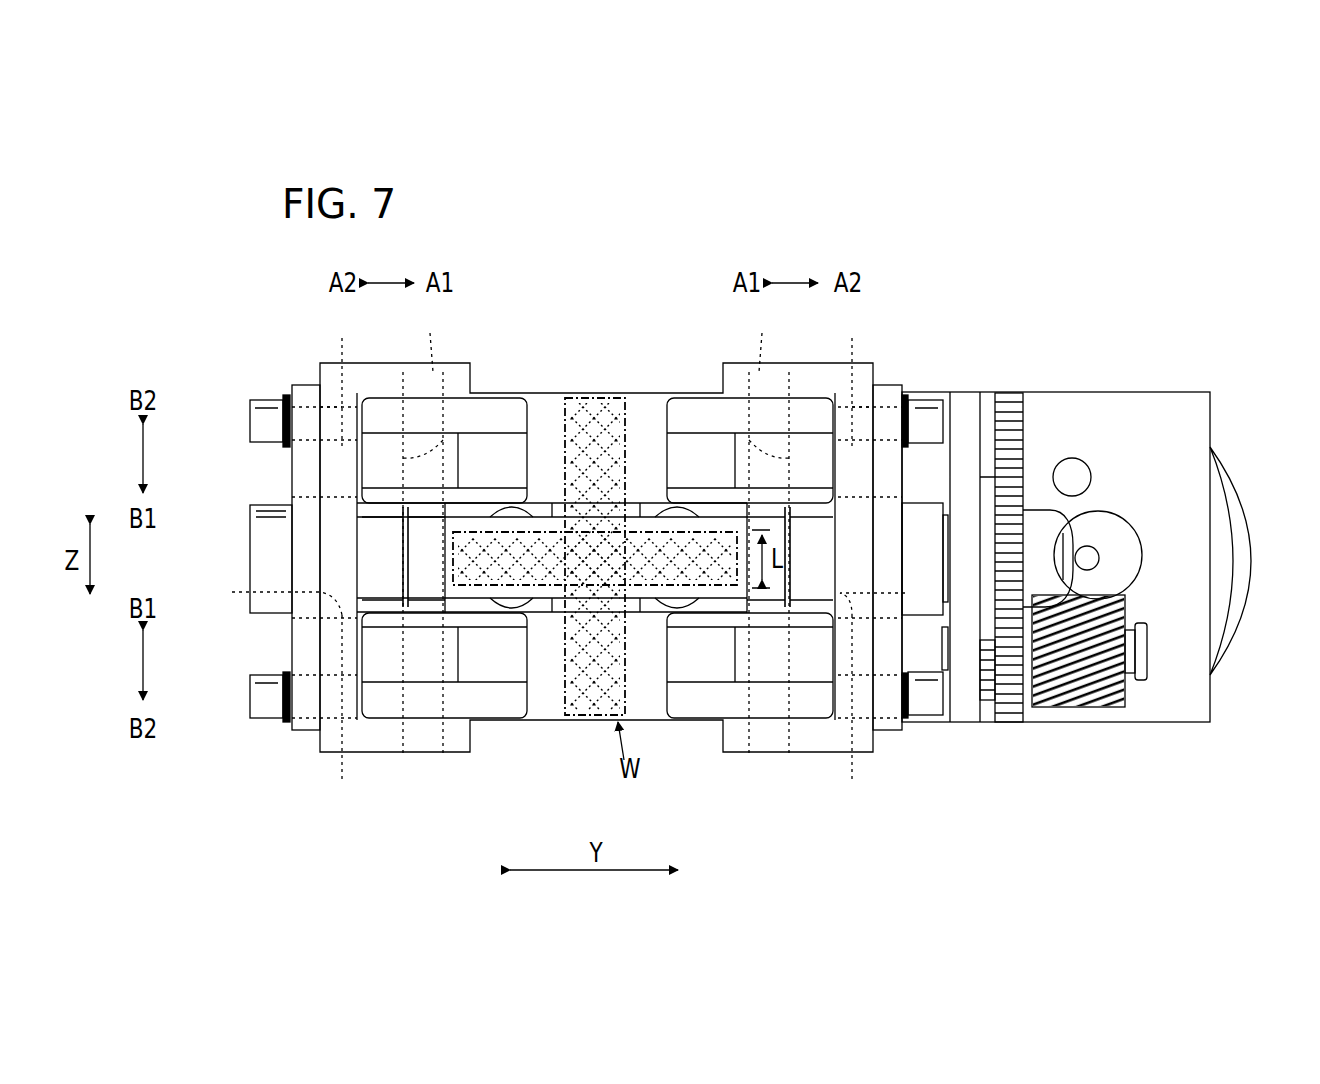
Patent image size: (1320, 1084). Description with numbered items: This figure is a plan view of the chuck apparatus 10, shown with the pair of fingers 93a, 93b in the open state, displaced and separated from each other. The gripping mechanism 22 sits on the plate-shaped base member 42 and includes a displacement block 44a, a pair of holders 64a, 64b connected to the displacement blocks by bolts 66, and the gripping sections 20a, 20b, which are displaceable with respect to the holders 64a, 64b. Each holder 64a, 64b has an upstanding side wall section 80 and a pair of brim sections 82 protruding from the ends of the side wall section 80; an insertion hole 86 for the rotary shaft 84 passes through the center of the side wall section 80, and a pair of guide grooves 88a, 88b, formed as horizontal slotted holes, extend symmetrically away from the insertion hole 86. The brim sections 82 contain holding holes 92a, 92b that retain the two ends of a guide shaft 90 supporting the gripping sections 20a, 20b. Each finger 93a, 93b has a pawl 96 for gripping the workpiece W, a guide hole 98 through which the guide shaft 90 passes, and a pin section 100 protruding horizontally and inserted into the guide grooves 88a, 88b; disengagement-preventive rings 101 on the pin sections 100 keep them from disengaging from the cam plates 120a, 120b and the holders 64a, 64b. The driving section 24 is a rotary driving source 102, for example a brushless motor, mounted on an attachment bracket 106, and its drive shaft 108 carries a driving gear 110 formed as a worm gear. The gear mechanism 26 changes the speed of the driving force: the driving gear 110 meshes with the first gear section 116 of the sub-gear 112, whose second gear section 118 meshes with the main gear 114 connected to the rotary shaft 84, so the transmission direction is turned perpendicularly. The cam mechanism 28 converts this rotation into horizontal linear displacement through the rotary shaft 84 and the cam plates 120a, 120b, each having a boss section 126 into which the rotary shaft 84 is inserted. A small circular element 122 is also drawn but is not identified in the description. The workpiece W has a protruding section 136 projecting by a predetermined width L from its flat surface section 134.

The chuck apparatus 10 is at (1048, 241).
The gripping section 20a is at (390, 745).
The gripping section 20b is at (800, 745).
The gripping mechanism 22 is at (500, 338).
The driving section 24 is at (1242, 495).
The gear mechanism 26 is at (1105, 722).
The cam mechanism 28 is at (286, 728).
The base member 42 is at (556, 722).
The displacement block 44a is at (545, 500).
The holder 64a is at (318, 362).
The holder 64b is at (874, 362).
The bolt 66 is at (515, 600).
The side wall section 80 is at (325, 470).
The brim section 82 is at (378, 378).
The rotary shaft 84 is at (735, 606).
The insertion hole 86 is at (569, 593).
The guide groove 88a is at (598, 706).
The guide groove 88b is at (598, 376).
The guide shaft 90 is at (405, 600).
The holding hole 92a is at (758, 755).
The holding hole 92b is at (596, 529).
The finger 93a is at (470, 728).
The finger 93b is at (470, 402).
The pawl 96 is at (503, 445).
The guide hole 98 is at (460, 395).
The pin section 100 is at (262, 427).
The disengagement-preventive ring 101 is at (285, 395).
The rotary driving source 102 is at (1250, 557).
The attachment bracket 106 is at (1113, 410).
The drive shaft 108 is at (1088, 555).
The driving gear 110 is at (1120, 565).
The sub-gear 112 is at (1060, 708).
The main gear 114 is at (1015, 418).
The first gear section 116 is at (1120, 685).
The second gear section 118 is at (984, 690).
The cam plate 120a is at (290, 637).
The cam plate 120b is at (900, 740).
The pin 122 is at (1060, 488).
The boss section 126 is at (262, 560).
The flat surface section 134 is at (600, 396).
The protruding section 136 is at (497, 700).